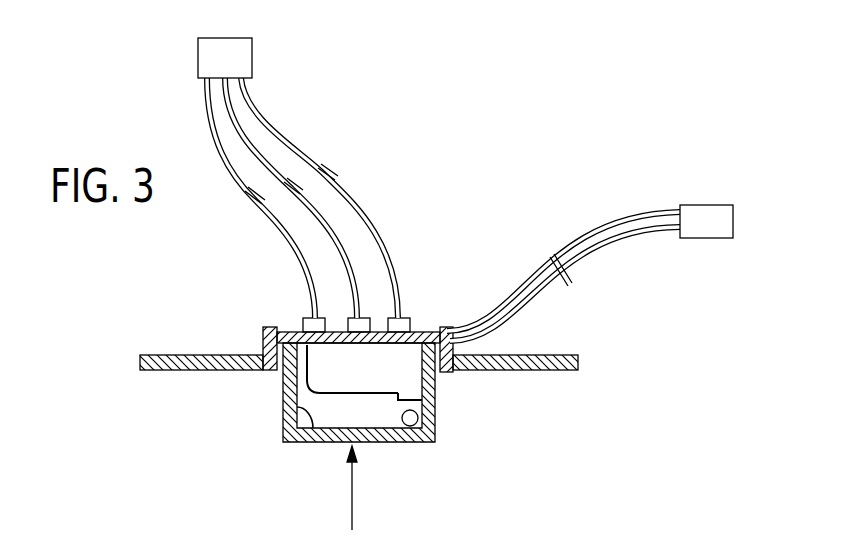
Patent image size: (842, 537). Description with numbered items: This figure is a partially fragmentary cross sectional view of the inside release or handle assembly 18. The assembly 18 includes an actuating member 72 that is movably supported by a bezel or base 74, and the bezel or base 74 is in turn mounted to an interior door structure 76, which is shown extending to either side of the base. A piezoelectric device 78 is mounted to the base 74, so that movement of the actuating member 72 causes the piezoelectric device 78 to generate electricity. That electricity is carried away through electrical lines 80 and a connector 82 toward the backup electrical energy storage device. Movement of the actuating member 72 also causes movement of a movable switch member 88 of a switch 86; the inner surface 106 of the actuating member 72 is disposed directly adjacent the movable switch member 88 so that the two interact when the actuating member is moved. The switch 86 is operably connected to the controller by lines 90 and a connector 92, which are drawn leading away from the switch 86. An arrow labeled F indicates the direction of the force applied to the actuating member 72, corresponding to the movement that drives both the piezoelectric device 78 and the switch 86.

The inside release or handle assembly 18 is at (386, 385).
The actuating member 72 is at (342, 443).
The bezel or base 74 is at (262, 337).
The interior door structure 76 is at (552, 371).
The piezoelectric device 78 is at (427, 332).
The electrical lines 80 is at (597, 218).
The connector 82 is at (710, 205).
The switch 86 is at (398, 383).
The movable switch member 88 is at (410, 426).
The lines 90 is at (333, 228).
The connector 92 is at (252, 52).
The inner surface 106 is at (290, 408).
The force F is at (344, 491).